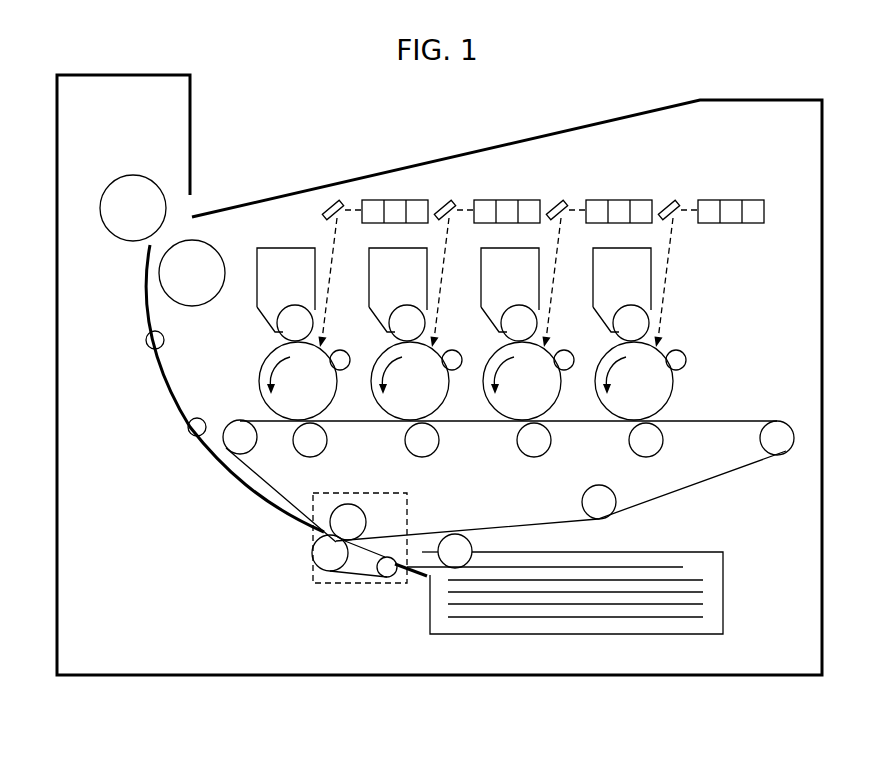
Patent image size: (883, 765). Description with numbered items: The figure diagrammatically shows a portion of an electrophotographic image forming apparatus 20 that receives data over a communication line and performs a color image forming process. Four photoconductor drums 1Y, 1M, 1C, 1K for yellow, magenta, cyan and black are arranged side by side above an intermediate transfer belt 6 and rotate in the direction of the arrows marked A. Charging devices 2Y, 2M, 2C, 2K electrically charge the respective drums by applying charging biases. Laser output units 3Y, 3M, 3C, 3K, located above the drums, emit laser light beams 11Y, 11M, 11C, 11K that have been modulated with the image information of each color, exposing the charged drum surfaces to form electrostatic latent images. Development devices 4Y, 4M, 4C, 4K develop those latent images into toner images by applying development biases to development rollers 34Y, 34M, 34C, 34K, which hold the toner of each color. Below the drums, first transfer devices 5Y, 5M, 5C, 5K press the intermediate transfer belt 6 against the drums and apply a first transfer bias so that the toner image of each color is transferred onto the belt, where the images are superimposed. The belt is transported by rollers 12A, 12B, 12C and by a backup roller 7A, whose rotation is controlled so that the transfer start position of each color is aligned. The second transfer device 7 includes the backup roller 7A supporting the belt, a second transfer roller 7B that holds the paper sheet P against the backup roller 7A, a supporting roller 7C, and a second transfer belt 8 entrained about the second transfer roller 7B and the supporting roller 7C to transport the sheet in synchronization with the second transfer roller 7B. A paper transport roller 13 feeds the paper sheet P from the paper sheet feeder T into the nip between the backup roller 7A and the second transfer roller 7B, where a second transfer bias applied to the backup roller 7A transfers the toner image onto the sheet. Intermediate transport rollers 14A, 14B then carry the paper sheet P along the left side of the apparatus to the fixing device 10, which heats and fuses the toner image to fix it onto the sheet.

The image forming apparatus 20 is at (828, 62).
The fixing device 10 is at (133, 175).
The intermediate transport roller 14A is at (165, 340).
The intermediate transport roller 14B is at (197, 417).
The photoconductor drum 1Y is at (334, 403).
The photoconductor drum 1M is at (446, 403).
The photoconductor drum 1C is at (558, 403).
The photoconductor drum 1K is at (670, 403).
The charging device 2Y is at (343, 350).
The charging device 2M is at (455, 350).
The charging device 2C is at (567, 350).
The charging device 2K is at (679, 350).
The laser output unit 3Y is at (394, 200).
The laser output unit 3M is at (506, 200).
The laser output unit 3C is at (618, 200).
The laser output unit 3K is at (730, 200).
The laser light beam 11Y is at (342, 200).
The laser light beam 11M is at (454, 200).
The laser light beam 11C is at (566, 200).
The laser light beam 11K is at (678, 200).
The development device 4Y is at (297, 248).
The development device 4M is at (398, 249).
The development device 4C is at (510, 249).
The development device 4K is at (622, 249).
The development roller 34Y is at (295, 305).
The development roller 34M is at (407, 305).
The development roller 34C is at (519, 305).
The development roller 34K is at (631, 305).
The first transfer device 5Y is at (324, 453).
The first transfer device 5M is at (436, 453).
The first transfer device 5C is at (548, 453).
The first transfer device 5K is at (660, 453).
The intermediate transfer belt 6 is at (728, 476).
The roller 12A is at (250, 452).
The roller 12B is at (582, 500).
The roller 12C is at (760, 438).
The second transfer device 7 is at (407, 507).
The backup roller 7A is at (366, 518).
The second transfer roller 7B is at (316, 563).
The supporting roller 7C is at (387, 578).
The second transfer belt 8 is at (352, 572).
The paper transport roller 13 is at (472, 551).
The paper sheet P is at (640, 567).
The paper sheet feeder T is at (723, 600).